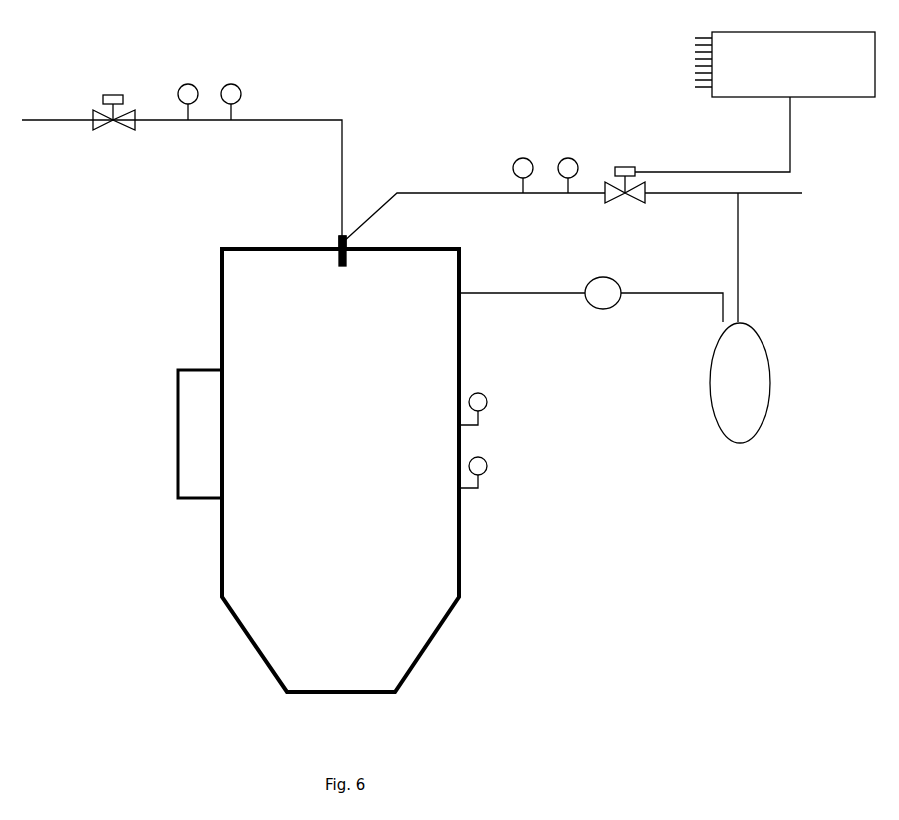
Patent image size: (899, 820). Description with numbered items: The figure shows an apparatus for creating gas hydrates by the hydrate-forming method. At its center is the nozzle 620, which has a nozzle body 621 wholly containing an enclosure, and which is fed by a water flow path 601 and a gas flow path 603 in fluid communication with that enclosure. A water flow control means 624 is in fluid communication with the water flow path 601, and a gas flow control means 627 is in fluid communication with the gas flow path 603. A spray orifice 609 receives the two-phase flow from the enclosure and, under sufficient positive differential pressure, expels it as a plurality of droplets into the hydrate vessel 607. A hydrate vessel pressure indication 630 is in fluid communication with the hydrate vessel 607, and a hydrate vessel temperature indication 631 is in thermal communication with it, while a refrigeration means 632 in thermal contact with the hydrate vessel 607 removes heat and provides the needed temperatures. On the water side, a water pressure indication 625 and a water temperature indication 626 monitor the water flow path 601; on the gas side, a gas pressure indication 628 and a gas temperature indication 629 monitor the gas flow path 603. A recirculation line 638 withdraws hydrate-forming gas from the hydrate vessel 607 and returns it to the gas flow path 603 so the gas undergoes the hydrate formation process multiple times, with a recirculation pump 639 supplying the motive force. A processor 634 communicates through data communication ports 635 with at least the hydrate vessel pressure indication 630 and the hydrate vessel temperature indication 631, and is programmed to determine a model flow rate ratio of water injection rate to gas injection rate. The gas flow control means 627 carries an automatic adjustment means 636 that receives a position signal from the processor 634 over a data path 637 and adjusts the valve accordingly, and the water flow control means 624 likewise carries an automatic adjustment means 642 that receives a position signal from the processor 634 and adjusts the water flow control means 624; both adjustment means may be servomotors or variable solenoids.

The water flow path 601 is at (340, 220).
The gas flow path 603 is at (367, 223).
The hydrate vessel 607 is at (222, 322).
The spray orifice 609 is at (347, 267).
The nozzle 620 is at (305, 224).
The nozzle body 621 is at (335, 245).
The water flow control means 624 is at (98, 118).
The water pressure indication 625 is at (185, 87).
The water temperature indication 626 is at (230, 86).
The gas flow control means 627 is at (613, 187).
The gas pressure indication 628 is at (566, 159).
The gas temperature indication 629 is at (520, 158).
The hydrate vessel pressure indication 630 is at (485, 396).
The hydrate vessel temperature indication 631 is at (487, 462).
The refrigeration means 632 is at (196, 438).
The processor 634 is at (819, 72).
The data communication ports 635 is at (670, 52).
The automatic adjustment means 636 is at (626, 167).
The data path 637 is at (790, 152).
The recirculation line 638 is at (538, 293).
The recirculation pump 639 is at (604, 293).
The automatic adjustment means 642 is at (116, 95).